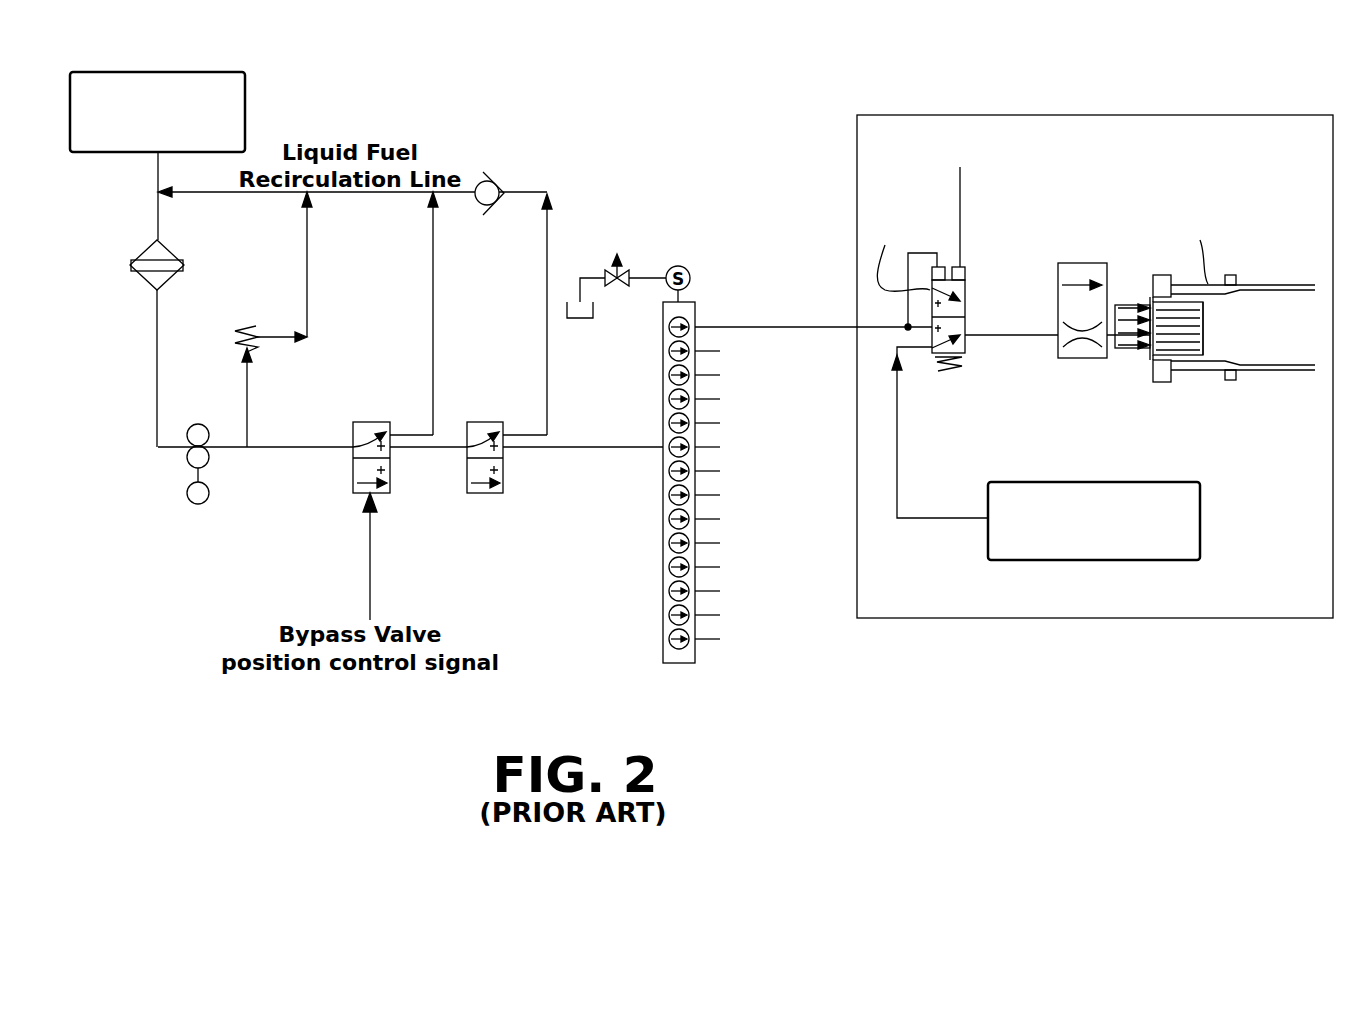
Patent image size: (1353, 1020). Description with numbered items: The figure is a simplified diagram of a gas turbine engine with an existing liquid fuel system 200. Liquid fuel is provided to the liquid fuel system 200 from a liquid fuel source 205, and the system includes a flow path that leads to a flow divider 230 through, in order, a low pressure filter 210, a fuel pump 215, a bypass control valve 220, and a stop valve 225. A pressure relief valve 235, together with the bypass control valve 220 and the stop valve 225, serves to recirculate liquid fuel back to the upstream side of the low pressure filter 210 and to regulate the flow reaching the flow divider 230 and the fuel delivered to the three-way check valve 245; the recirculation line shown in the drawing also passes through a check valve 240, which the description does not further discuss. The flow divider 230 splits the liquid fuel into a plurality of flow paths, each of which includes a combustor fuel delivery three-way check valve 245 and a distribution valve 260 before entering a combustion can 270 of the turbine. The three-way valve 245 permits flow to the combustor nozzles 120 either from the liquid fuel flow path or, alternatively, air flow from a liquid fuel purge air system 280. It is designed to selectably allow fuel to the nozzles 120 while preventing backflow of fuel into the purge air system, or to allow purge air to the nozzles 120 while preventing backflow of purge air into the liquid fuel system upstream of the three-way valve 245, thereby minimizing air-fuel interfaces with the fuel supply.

The liquid fuel system 200 is at (708, 103).
The liquid fuel source 205 is at (247, 113).
The low pressure filter 210 is at (143, 282).
The fuel pump 215 is at (208, 500).
The bypass control valve 220 is at (353, 470).
The stop valve 225 is at (467, 470).
The flow divider 230 is at (660, 598).
The pressure relief valve 235 is at (242, 326).
The check valve 240 is at (496, 181).
The three-way check valve 245 is at (965, 290).
The distribution valve 260 is at (1118, 262).
The combustion can 270 is at (1214, 398).
The liquid fuel purge air system 280 is at (1180, 560).
The combustor nozzles 120 is at (1228, 323).